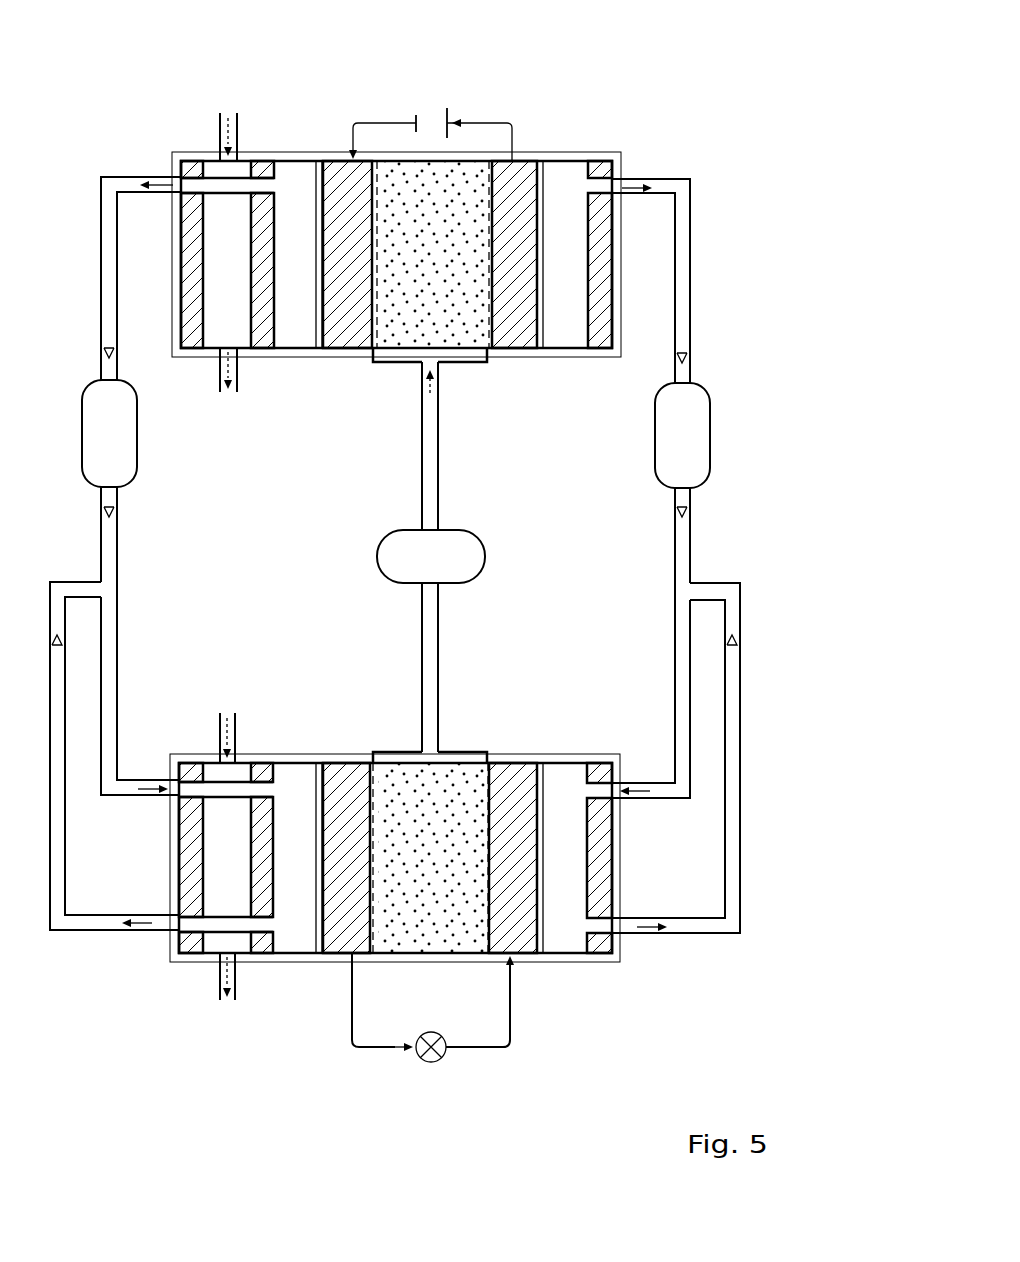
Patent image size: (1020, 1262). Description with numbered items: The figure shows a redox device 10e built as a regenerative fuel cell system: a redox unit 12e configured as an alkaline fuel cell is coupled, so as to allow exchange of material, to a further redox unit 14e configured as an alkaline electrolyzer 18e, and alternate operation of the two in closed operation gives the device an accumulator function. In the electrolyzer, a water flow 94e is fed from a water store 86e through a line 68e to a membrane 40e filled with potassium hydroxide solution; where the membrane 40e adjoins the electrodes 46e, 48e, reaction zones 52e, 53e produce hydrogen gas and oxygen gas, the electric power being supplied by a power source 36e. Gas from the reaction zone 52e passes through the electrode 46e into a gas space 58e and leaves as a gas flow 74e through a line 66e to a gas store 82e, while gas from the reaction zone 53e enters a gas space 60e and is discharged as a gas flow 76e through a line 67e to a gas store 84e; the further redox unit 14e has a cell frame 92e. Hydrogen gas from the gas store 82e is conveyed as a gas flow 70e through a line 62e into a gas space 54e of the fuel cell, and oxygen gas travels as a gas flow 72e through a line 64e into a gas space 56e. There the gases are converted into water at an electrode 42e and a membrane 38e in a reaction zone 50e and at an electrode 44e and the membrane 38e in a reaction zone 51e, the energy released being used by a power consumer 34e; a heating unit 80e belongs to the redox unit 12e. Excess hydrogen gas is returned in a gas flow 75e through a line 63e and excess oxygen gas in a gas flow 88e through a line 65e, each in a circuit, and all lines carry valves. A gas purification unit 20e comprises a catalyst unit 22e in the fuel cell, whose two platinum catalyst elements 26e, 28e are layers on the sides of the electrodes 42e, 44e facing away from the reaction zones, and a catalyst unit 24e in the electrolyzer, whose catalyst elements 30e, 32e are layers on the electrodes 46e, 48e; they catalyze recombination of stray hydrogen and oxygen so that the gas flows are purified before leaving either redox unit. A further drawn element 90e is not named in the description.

The redox device 10e is at (88, 90).
The redox unit 12e is at (618, 976).
The further redox unit 14e is at (628, 144).
The alkaline electrolyzer 18e is at (454, 566).
The gas purification unit 20e is at (320, 745).
The catalyst unit 22e is at (318, 977).
The catalyst unit 24e is at (320, 145).
The catalyst element 26e is at (310, 946).
The catalyst element 28e is at (550, 944).
The catalyst element 30e is at (542, 158).
The catalyst element 32e is at (328, 157).
The power consumer 34e is at (431, 1063).
The power source 36e is at (430, 112).
The membrane 38e is at (423, 937).
The membrane 40e is at (400, 348).
The electrode 42e is at (337, 946).
The electrode 44e is at (523, 974).
The electrode 46e is at (335, 323).
The electrode 48e is at (523, 303).
The reaction zone 50e is at (365, 948).
The reaction zone 51e is at (495, 948).
The reaction zone 52e is at (368, 328).
The reaction zone 53e is at (496, 336).
The gas space 54e is at (290, 778).
The gas space 56e is at (568, 776).
The gas space 58e is at (295, 167).
The gas space 60e is at (572, 176).
The line 62e is at (150, 780).
The line 63e is at (130, 915).
The line 64e is at (652, 798).
The line 65e is at (660, 876).
The line 66e is at (120, 176).
The line 67e is at (662, 179).
The line 68e is at (422, 484).
The gas flow 70e is at (152, 797).
The gas flow 72e is at (633, 783).
The gas flow 74e is at (152, 176).
The gas flow 75e is at (140, 932).
The gas flow 76e is at (633, 195).
The heating unit 80e is at (205, 958).
The gas store 82e is at (113, 437).
The gas store 84e is at (675, 453).
The water store 86e is at (460, 556).
The gas flow 88e is at (665, 933).
The first cell right electrode block 90e is at (600, 963).
The cell frame 92e is at (603, 358).
The water flow 94e is at (437, 388).